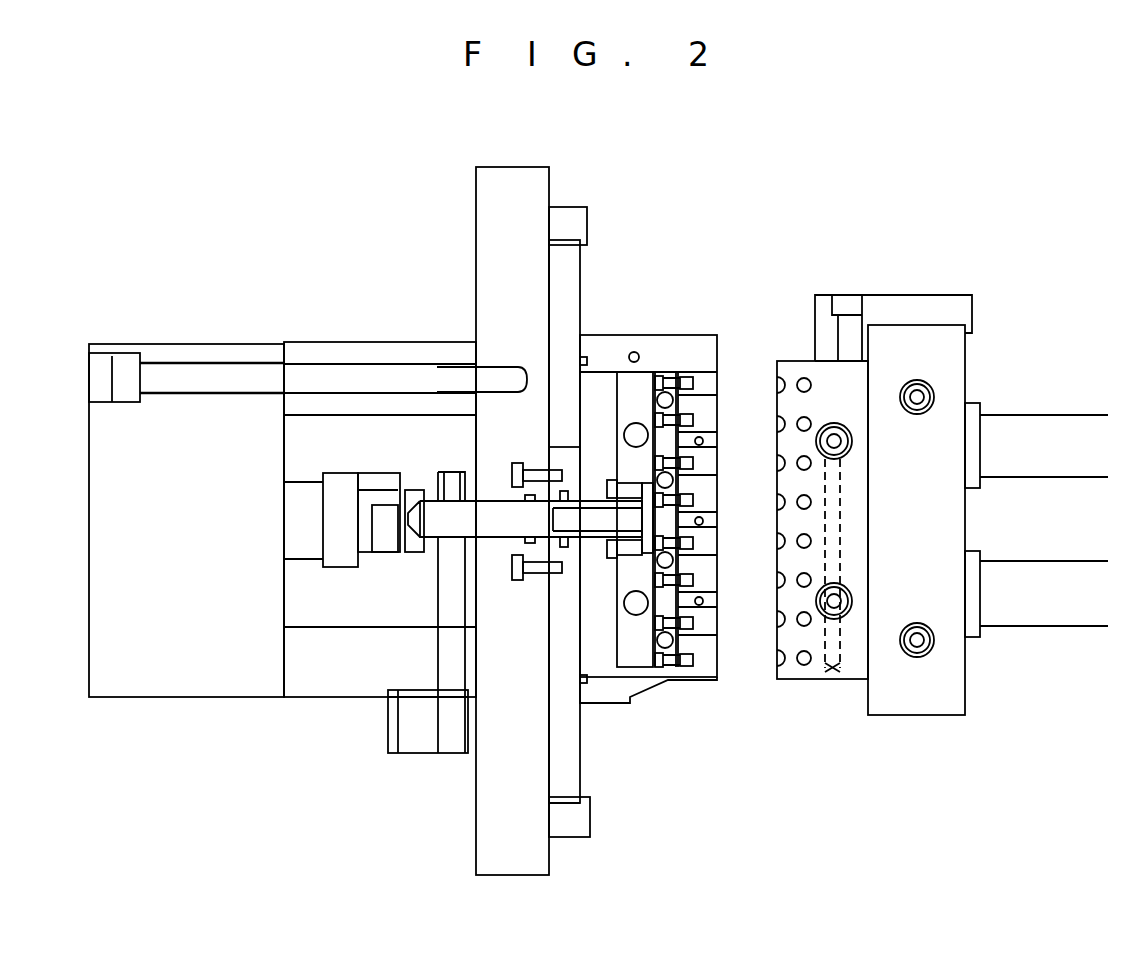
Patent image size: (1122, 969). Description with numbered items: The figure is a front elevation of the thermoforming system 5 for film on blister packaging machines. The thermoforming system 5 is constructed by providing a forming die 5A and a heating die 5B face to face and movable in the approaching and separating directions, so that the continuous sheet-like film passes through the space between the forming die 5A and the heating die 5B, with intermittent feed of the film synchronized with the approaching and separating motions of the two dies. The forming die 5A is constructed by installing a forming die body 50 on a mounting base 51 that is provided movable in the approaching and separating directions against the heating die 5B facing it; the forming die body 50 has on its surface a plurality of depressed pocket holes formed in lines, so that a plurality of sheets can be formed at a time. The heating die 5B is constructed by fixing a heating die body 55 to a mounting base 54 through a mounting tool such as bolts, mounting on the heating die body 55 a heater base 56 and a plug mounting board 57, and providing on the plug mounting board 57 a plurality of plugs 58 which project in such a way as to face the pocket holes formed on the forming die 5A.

The thermoforming system 5 is at (763, 519).
The forming die 5A is at (942, 470).
The heating die 5B is at (601, 468).
The forming die body 50 is at (853, 663).
The mounting base 51 is at (940, 685).
The mounting base 54 is at (497, 823).
The heating die body 55 is at (620, 690).
The heater base 56 is at (623, 398).
The plug mounting board 57 is at (665, 380).
The plugs 58 is at (706, 425).